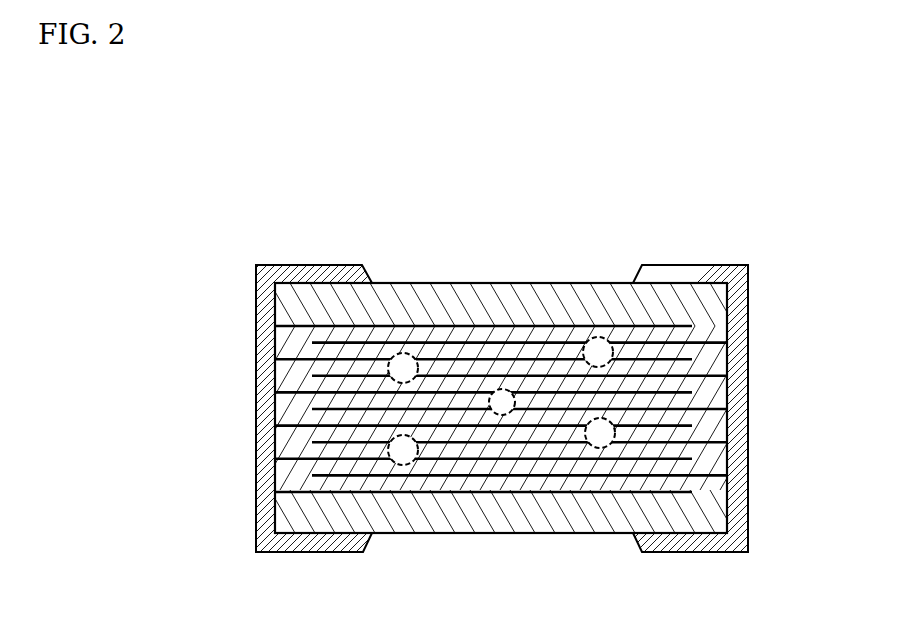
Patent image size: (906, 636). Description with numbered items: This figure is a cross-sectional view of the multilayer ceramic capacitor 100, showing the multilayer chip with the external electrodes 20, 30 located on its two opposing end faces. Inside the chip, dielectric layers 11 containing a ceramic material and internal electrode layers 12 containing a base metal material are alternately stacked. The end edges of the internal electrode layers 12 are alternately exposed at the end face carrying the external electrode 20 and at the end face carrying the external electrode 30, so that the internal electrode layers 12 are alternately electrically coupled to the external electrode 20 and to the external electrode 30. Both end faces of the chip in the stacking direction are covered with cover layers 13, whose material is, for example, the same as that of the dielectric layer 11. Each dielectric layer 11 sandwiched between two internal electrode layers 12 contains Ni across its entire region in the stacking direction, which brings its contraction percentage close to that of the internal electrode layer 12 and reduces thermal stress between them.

The multilayer ceramic capacitor 100 is at (670, 222).
The dielectric layer 11 is at (592, 463).
The internal electrode layer 12 is at (492, 443).
The cover layer 13 is at (422, 295).
The external electrode 20 is at (282, 279).
The external electrode 30 is at (723, 277).